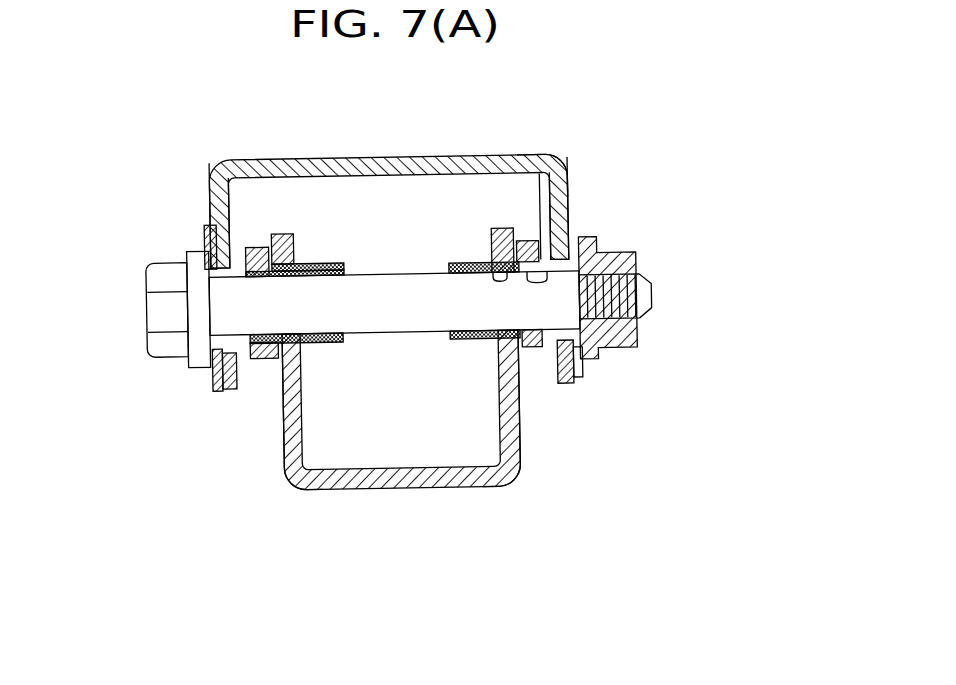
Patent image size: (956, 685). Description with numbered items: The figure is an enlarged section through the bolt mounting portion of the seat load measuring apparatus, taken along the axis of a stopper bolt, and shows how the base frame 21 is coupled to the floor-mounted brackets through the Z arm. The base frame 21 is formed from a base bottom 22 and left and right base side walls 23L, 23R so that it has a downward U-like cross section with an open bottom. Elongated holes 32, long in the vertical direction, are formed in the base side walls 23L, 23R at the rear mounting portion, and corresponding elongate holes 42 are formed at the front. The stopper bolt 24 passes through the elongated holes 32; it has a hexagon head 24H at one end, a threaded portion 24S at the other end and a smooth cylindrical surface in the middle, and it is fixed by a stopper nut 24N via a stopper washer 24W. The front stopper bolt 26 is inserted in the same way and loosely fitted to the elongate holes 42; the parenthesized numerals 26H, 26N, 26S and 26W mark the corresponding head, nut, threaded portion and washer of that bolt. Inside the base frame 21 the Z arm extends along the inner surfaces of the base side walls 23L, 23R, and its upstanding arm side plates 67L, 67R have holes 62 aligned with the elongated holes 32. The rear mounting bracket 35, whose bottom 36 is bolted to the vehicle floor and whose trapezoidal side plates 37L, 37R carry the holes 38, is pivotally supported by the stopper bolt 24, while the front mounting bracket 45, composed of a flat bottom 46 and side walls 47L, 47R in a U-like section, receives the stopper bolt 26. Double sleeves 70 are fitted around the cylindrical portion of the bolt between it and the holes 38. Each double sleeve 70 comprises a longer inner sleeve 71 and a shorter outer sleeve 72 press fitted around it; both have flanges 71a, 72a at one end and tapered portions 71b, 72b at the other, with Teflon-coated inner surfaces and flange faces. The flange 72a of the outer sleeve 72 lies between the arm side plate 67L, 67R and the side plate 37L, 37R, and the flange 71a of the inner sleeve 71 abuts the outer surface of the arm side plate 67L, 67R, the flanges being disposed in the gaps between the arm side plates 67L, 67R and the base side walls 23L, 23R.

The base frame 21 is at (250, 146).
The base bottom 22 is at (353, 158).
The left base side wall 23L is at (212, 211).
The right base side wall 23R is at (576, 195).
The stopper bolt 24 is at (413, 392).
The stopper bolt 26 is at (413, 392).
The hexagon head 24H is at (134, 326).
The head of pedal shaft (alternative) 26H is at (158, 322).
The stopper nut 24N is at (654, 315).
The nut portion (alternative) 26N is at (615, 340).
The threaded portion 24S is at (674, 308).
The threaded portion (alternative) 26S is at (650, 297).
The stopper washer 24W is at (380, 401).
The washer (alternative) 26W is at (583, 367).
The elongated holes 32 is at (381, 359).
The elongate holes 42 is at (557, 386).
The rear mounting bracket 35 is at (410, 486).
The front mounting bracket 45 is at (410, 486).
The bottom 36 is at (401, 440).
The flat bottom 46 is at (378, 492).
The trapezoidal side plate 37L is at (321, 467).
The left side wall 47L is at (306, 493).
The trapezoidal side plate 37R is at (492, 462).
The right side wall 47R is at (492, 462).
The holes 38 is at (500, 232).
The holes 62 is at (546, 153).
The left arm side plate 67L is at (263, 352).
The right arm side plate 67R is at (528, 352).
The double sleeve 70 is at (389, 314).
The inner sleeve 71 is at (452, 268).
The flange 71a is at (246, 250).
The tapered portion 71b is at (340, 266).
The outer sleeve 72 is at (478, 266).
The flange 72a is at (265, 250).
The tapered portion 72b is at (309, 266).